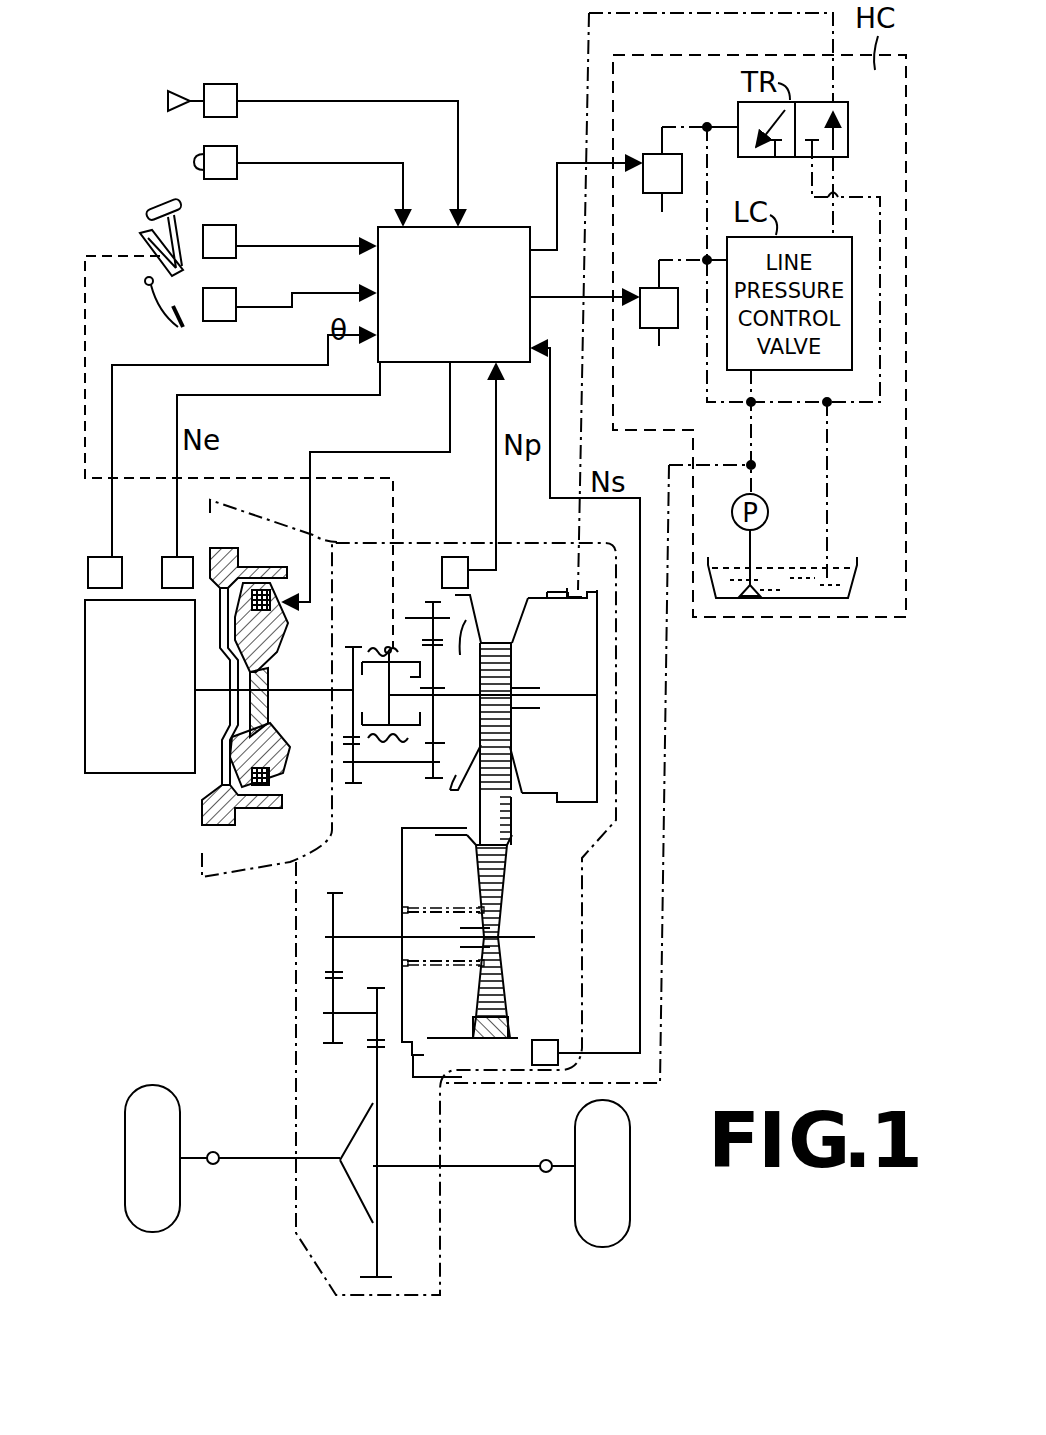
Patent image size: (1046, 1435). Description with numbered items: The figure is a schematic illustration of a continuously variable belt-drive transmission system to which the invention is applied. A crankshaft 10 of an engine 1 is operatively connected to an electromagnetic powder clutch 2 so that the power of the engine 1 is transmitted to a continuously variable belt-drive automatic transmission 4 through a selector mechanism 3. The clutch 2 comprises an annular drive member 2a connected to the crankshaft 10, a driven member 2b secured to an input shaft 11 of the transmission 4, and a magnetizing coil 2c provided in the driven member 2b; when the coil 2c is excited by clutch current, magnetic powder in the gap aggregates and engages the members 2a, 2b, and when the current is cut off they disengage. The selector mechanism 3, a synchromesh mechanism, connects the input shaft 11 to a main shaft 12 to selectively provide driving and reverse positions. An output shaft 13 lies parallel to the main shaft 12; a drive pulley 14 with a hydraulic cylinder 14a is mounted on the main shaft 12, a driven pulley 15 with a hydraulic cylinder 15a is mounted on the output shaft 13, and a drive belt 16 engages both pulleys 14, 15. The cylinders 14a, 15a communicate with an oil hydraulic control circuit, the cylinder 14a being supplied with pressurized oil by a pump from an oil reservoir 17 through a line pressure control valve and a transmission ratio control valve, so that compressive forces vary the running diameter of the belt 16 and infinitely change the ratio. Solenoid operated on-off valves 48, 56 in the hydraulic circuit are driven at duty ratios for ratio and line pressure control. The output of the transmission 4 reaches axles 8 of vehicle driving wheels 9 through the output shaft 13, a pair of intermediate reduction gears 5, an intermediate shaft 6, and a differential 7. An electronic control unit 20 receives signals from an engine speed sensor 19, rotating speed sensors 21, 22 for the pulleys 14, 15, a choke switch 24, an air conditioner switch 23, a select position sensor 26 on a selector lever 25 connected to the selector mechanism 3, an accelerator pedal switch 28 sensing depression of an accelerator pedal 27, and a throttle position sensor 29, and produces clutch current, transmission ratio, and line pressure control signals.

The engine 1 is at (125, 785).
The electromagnetic powder clutch 2 is at (241, 675).
The annular drive member 2a is at (205, 565).
The driven member 2b is at (275, 632).
The magnetizing coil 2c is at (272, 575).
The selector mechanism 3 is at (374, 642).
The continuously variable belt-drive automatic transmission 4 is at (505, 618).
The intermediate reduction gears 5 is at (345, 895).
The intermediate shaft 6 is at (360, 1010).
The differential 7 is at (355, 1150).
The axles 8 is at (262, 1160).
The vehicle driving wheels 9 is at (170, 1205).
The crankshaft 10 is at (200, 698).
The input shaft 11 is at (308, 698).
The main shaft 12 is at (463, 700).
The output shaft 13 is at (357, 935).
The drive pulley 14 is at (460, 692).
The hydraulic cylinder 14a is at (570, 760).
The driven pulley 15 is at (513, 832).
The hydraulic cylinder 15a is at (425, 850).
The drive belt 16 is at (478, 810).
The oil reservoir 17 is at (860, 575).
The engine speed sensor 19 is at (160, 556).
The electronic control unit 20 is at (508, 228).
The rotating speed sensor 21 is at (440, 580).
The rotating speed sensor 22 is at (550, 1040).
The air conditioner switch 23 is at (240, 160).
The choke switch 24 is at (240, 95).
The selector lever 25 is at (157, 205).
The select position sensor 26 is at (240, 240).
The accelerator pedal 27 is at (162, 313).
The accelerator pedal switch 28 is at (240, 305).
The throttle position sensor 29 is at (95, 555).
The solenoid operated on-off valve 48 is at (650, 152).
The solenoid operated on-off valve 56 is at (648, 285).